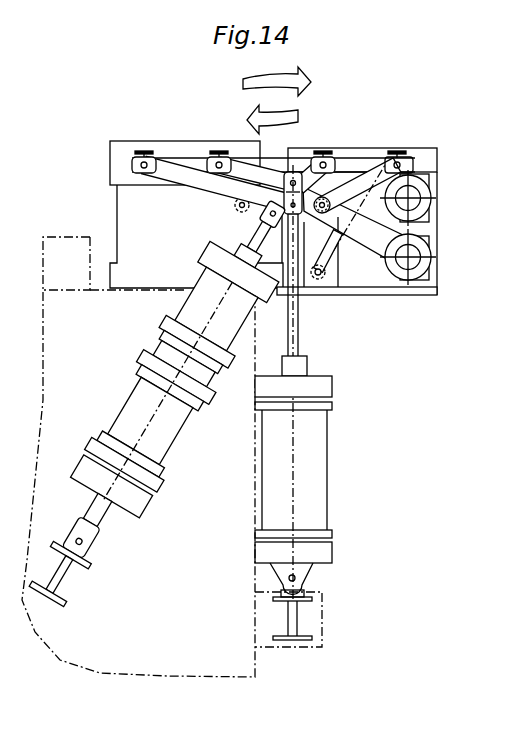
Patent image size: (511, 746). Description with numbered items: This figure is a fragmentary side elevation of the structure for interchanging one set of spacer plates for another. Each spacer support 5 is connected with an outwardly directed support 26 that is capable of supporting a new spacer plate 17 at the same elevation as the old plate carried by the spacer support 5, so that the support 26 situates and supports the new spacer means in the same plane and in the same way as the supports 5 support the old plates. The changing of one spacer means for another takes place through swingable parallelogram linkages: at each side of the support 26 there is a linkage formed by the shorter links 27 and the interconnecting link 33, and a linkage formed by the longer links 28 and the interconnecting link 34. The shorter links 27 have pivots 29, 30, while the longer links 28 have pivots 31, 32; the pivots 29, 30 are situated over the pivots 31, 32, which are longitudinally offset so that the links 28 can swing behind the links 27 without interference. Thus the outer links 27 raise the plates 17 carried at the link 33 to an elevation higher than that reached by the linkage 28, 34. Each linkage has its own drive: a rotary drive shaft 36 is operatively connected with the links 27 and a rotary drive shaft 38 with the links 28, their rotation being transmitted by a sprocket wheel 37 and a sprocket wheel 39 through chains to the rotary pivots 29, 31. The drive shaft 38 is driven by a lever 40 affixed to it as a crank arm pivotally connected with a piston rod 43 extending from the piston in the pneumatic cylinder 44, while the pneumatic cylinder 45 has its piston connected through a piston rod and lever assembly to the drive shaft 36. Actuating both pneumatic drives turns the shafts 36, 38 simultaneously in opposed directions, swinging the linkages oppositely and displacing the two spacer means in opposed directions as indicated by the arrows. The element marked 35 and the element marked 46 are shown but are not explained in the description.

The spacer support 5 is at (118, 168).
The spacer plate 17 is at (118, 152).
The outwardly directed support 26 is at (353, 268).
The shorter link 27 is at (238, 172).
The longer link 28 is at (303, 187).
The pivot 29 is at (336, 231).
The pivot 30 is at (240, 206).
The pivot 31 is at (318, 280).
The pivot 32 is at (187, 290).
The interconnecting link 33 is at (167, 158).
The interconnecting link 34 is at (412, 166).
The bolts 35 is at (142, 150).
The rotary drive shaft 36 is at (420, 198).
The sprocket wheel 37 is at (430, 190).
The rotary drive shaft 38 is at (420, 257).
The sprocket wheel 39 is at (420, 272).
The lever 40 is at (375, 256).
The piston rod 43 is at (289, 342).
The pneumatic cylinder 44 is at (307, 458).
The pneumatic cylinder 45 is at (153, 458).
The base frame 46 is at (193, 553).